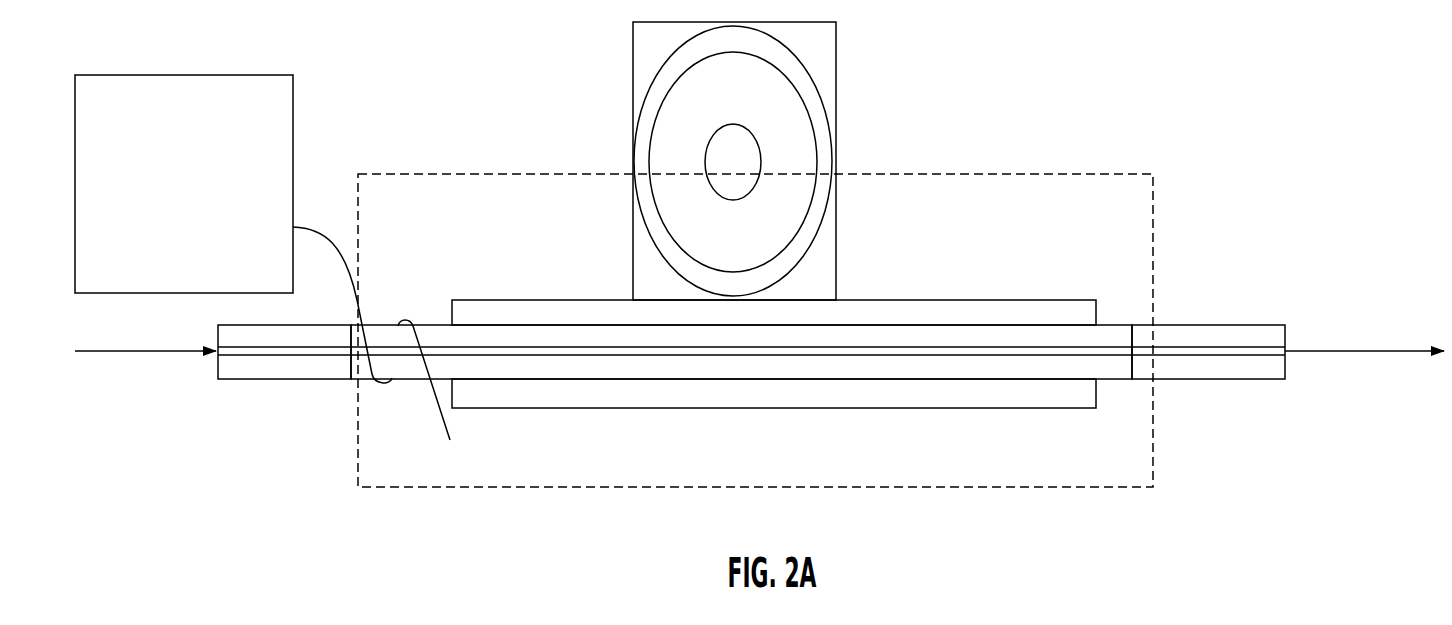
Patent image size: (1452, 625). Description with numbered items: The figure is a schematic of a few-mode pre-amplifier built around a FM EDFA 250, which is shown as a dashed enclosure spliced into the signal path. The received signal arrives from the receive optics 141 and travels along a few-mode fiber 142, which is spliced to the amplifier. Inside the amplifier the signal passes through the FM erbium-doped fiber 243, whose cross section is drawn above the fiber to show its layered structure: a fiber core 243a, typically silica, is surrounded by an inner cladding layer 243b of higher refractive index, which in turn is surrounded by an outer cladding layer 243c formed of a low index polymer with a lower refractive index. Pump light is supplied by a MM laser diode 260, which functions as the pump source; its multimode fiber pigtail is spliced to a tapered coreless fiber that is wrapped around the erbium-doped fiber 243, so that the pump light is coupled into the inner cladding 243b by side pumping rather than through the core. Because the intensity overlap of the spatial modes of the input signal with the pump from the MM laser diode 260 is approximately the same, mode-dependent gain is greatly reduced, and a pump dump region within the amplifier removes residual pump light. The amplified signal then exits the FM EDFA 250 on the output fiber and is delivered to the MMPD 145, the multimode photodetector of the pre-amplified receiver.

The MM laser diode 260 is at (167, 75).
The receive optics 141 is at (153, 473).
The few-mode fiber 142 is at (280, 380).
The FM EDFA 250 is at (405, 487).
The FM erbium-doped fiber 243 is at (741, 252).
The fiber core 243a is at (745, 173).
The inner cladding layer 243b is at (800, 169).
The outer cladding layer 243c is at (819, 124).
The MMPD 145 is at (1364, 466).